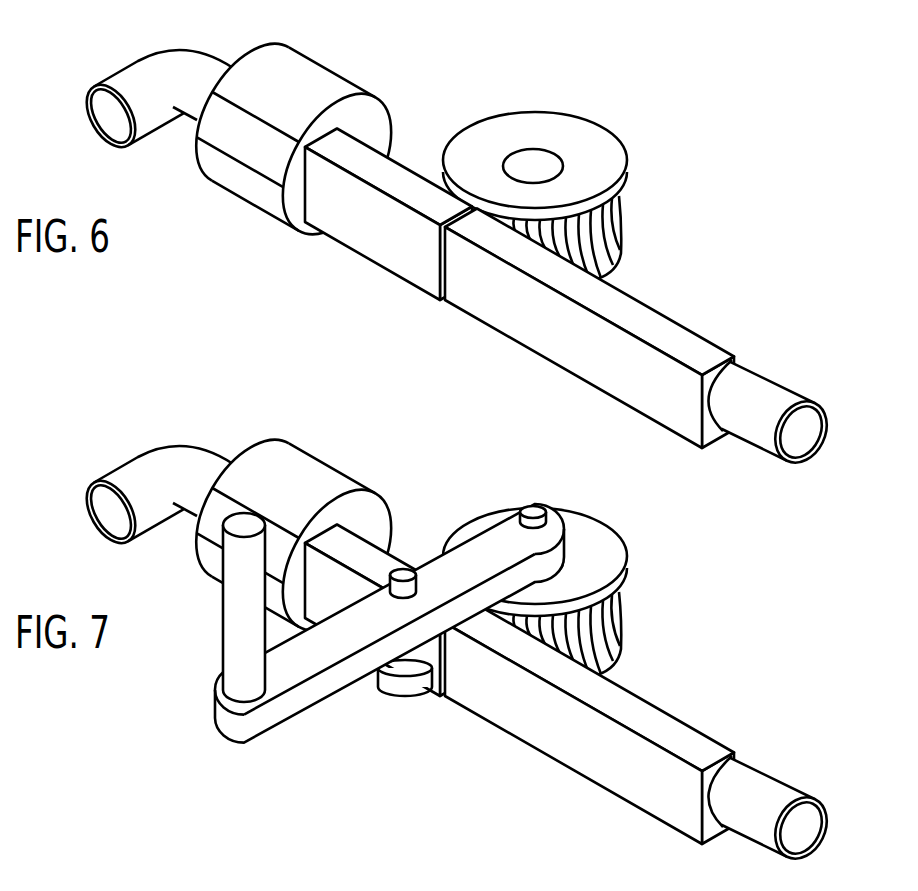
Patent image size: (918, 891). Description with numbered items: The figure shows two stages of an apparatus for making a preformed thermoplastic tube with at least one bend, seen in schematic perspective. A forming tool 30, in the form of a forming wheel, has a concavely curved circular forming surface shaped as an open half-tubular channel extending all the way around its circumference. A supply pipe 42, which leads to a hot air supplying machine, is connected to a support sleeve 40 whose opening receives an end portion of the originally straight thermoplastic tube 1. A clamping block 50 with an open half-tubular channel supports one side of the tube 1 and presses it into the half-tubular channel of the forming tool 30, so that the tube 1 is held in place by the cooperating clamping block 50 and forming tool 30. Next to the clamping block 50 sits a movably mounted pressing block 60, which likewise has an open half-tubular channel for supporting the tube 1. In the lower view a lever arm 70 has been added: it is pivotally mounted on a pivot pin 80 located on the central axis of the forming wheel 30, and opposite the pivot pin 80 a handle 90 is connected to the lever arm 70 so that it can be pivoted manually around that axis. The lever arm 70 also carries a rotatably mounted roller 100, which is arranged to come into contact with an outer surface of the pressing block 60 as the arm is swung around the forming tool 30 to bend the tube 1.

In FIG. 6, the thermoplastic tube 1 is at (760, 415).
In FIG. 7, the thermoplastic tube 1 is at (769, 811).
In FIG. 6, the forming tool 30 is at (624, 124).
In FIG. 6, the support sleeve 40 is at (314, 62).
In FIG. 7, the support sleeve 40 is at (294, 527).
In FIG. 6, the supply pipe 42 is at (123, 73).
In FIG. 7, the supply pipe 42 is at (155, 478).
In FIG. 6, the clamping block 50 is at (387, 232).
In FIG. 7, the clamping block 50 is at (388, 611).
In FIG. 6, the pressing block 60 is at (590, 345).
In FIG. 7, the pressing block 60 is at (589, 725).
In FIG. 7, the lever arm 70 is at (443, 562).
In FIG. 7, the pivot pin 80 is at (528, 505).
In FIG. 7, the handle 90 is at (230, 612).
In FIG. 7, the roller 100 is at (400, 701).